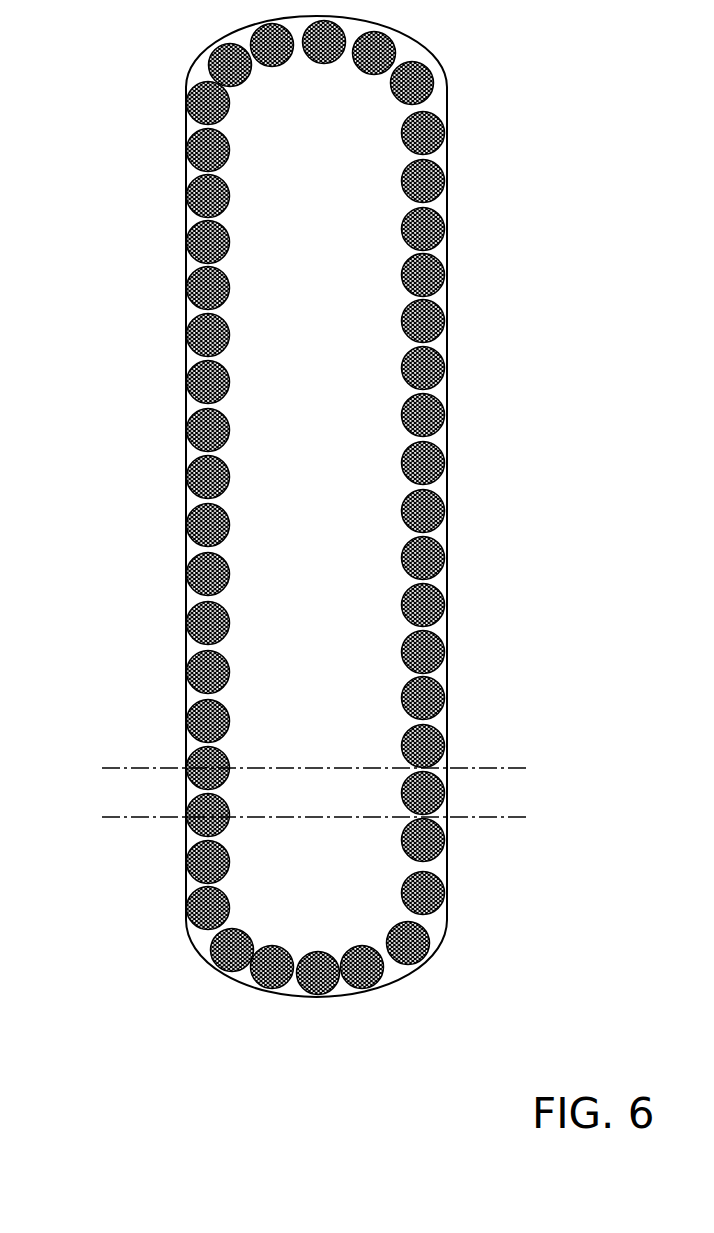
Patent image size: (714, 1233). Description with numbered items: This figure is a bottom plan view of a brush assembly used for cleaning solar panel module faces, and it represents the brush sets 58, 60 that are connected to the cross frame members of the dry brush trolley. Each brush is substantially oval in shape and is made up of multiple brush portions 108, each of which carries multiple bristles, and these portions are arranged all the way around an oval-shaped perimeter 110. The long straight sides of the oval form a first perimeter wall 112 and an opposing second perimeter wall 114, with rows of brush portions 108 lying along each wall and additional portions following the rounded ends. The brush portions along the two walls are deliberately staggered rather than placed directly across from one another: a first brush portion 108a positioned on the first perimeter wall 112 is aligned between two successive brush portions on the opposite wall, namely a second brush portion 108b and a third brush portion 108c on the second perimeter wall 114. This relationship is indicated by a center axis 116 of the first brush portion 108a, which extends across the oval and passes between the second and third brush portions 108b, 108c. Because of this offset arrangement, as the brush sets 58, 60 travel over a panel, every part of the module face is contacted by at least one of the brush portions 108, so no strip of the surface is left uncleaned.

The first brush set 58 is at (333, 504).
The second brush set 60 is at (333, 506).
The brush portions 108 is at (188, 296).
The first brush portion 108a is at (186, 762).
The second brush portion 108b is at (446, 742).
The third brush portion 108c is at (446, 796).
The oval-shaped perimeter 110 is at (178, 400).
The first perimeter wall 112 is at (186, 555).
The second perimeter wall 114 is at (446, 507).
The center axis 116 is at (490, 768).